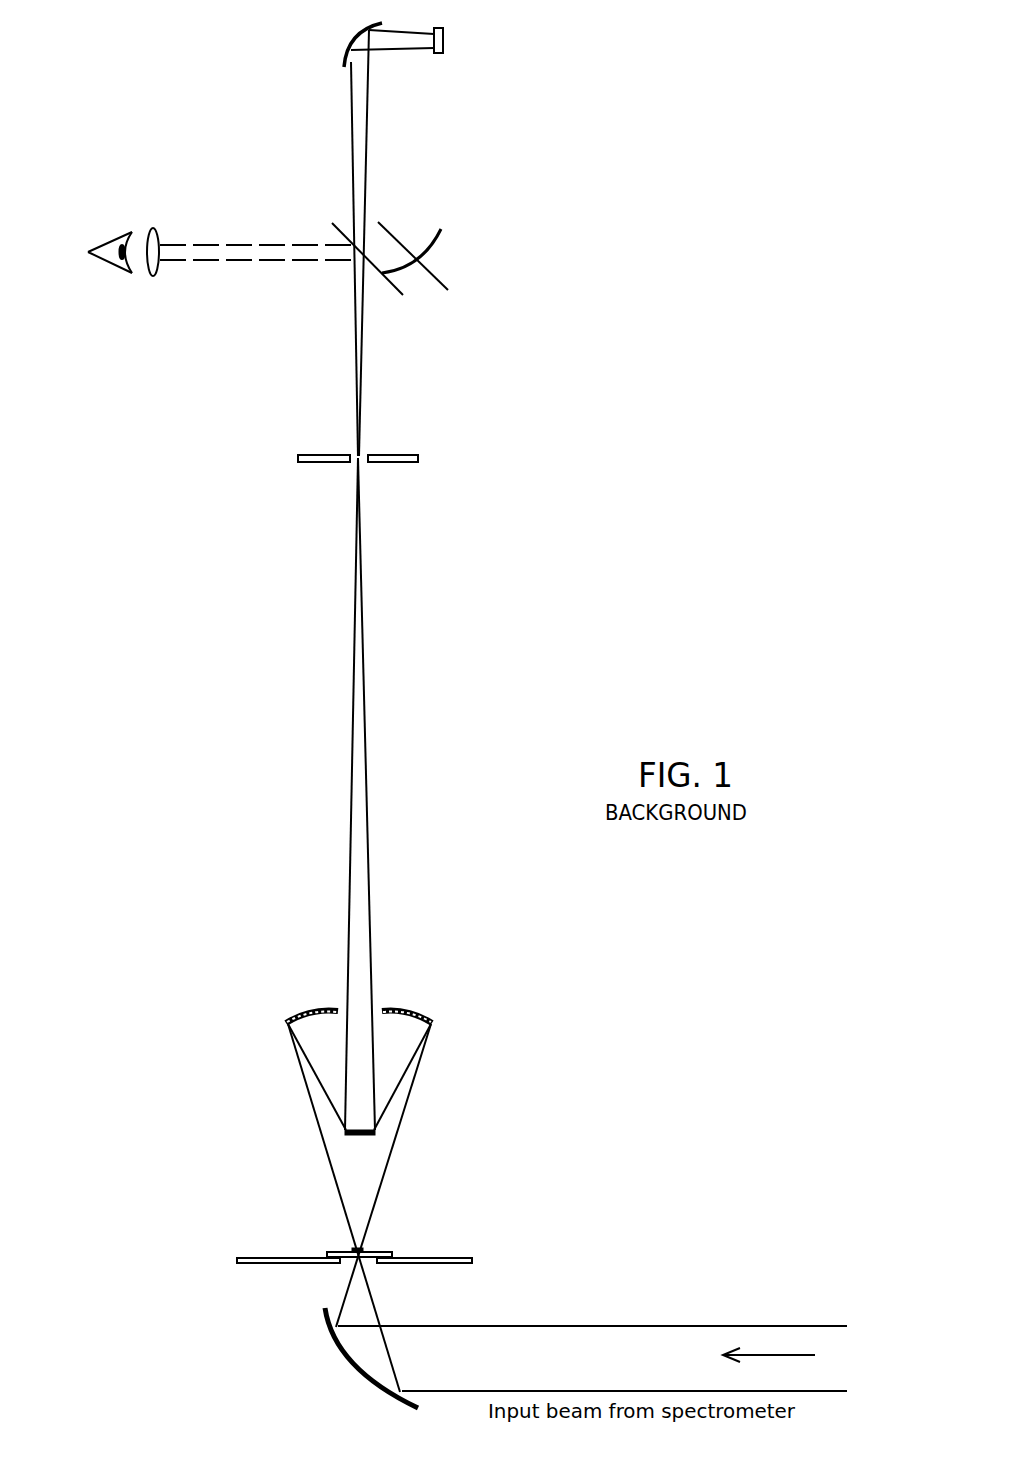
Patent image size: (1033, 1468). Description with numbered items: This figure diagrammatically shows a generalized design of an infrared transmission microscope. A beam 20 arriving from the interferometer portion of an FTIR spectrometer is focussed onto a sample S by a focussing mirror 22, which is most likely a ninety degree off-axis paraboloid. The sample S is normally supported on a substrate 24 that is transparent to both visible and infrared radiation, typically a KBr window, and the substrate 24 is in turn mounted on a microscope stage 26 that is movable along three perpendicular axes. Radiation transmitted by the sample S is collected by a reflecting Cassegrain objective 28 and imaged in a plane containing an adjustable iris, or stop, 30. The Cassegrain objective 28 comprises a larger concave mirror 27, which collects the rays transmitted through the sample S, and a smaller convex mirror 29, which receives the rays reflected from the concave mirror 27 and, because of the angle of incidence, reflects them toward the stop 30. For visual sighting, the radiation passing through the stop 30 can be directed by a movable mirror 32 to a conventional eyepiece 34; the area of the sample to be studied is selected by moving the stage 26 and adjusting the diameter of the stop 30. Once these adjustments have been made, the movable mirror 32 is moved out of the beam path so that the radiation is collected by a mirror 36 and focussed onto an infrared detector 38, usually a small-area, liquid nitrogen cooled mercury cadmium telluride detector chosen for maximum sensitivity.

The beam 20 is at (428, 1326).
The focussing mirror 22 is at (345, 1340).
The substrate 24 is at (384, 1252).
The microscope stage 26 is at (472, 1262).
The sample S is at (352, 1250).
The larger concave mirror 27 is at (408, 1008).
The reflecting Cassegrain objective 28 is at (277, 1005).
The smaller convex mirror 29 is at (354, 1137).
The adjustable iris or stop 30 is at (368, 456).
The movable mirror 32 is at (441, 229).
The eyepiece 34 is at (183, 212).
The mirror 36 is at (352, 44).
The infrared detector 38 is at (438, 53).